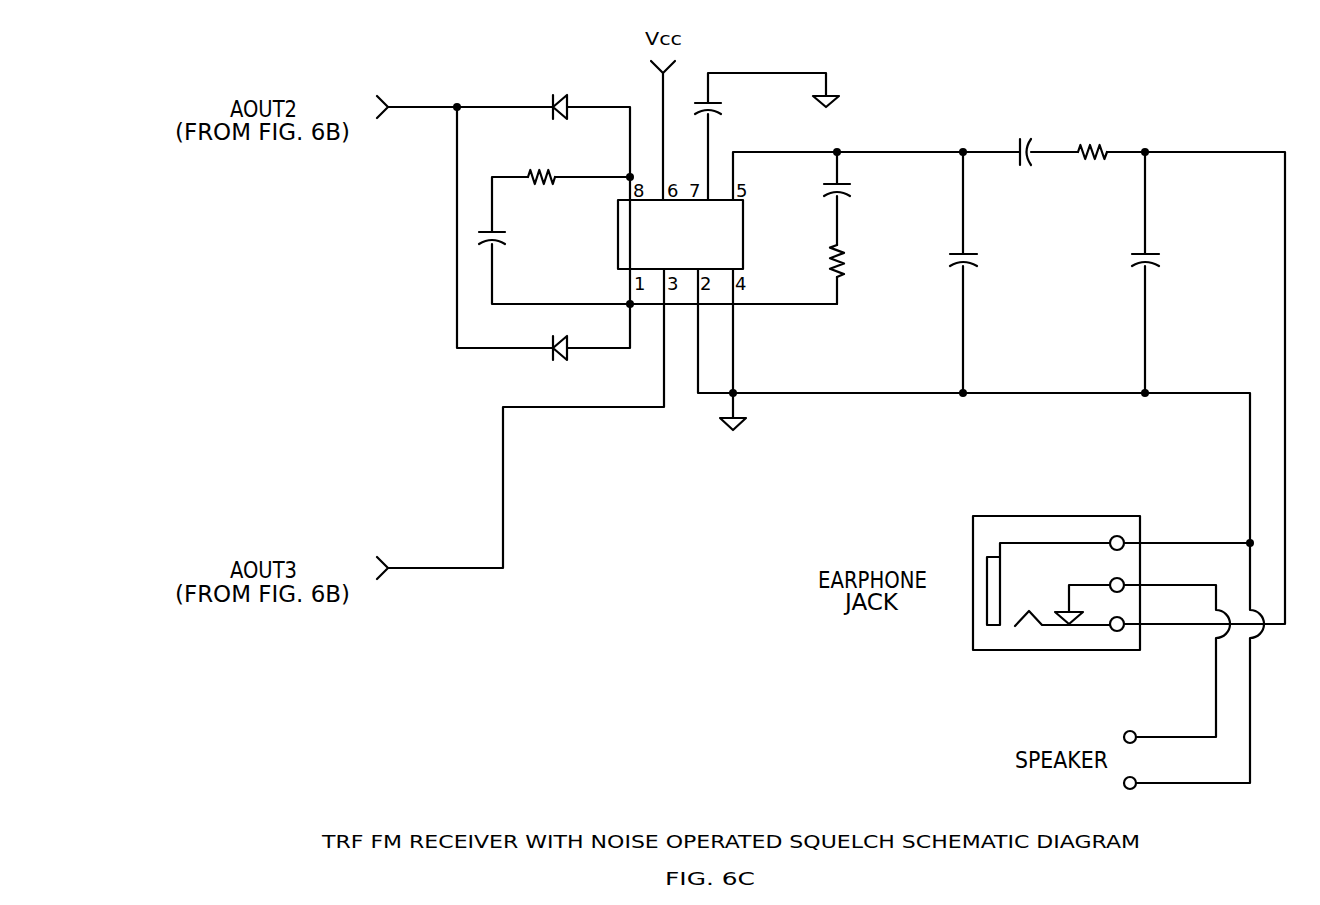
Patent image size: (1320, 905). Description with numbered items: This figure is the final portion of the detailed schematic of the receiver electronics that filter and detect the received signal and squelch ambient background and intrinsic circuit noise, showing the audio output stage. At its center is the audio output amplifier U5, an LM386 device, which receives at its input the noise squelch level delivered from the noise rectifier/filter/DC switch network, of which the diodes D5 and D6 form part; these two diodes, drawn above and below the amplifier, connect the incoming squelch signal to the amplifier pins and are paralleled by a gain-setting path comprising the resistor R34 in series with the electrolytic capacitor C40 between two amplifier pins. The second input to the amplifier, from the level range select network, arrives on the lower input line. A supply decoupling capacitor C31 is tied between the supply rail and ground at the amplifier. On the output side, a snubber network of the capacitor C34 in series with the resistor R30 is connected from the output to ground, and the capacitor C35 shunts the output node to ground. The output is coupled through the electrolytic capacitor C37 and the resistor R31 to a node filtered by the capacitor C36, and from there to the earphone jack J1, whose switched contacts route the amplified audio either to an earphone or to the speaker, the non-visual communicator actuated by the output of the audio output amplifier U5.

The diode D5 is at (566, 107).
The diode D6 is at (566, 349).
The resistor 1K R34 is at (548, 178).
The capacitor 10uF C40 is at (516, 241).
The audio output amplifier U5 is at (680, 234).
The capacitor 4.7uF 10V C31 is at (741, 121).
The capacitor 2200pF C34 is at (877, 190).
The resistor 15K R30 is at (862, 269).
The capacitor 100uF 10V C37 is at (1019, 165).
The resistor 3.3 R31 is at (1097, 153).
The capacitor 0.027 C35 is at (996, 259).
The capacitor 22uF 16V C36 is at (1169, 269).
The earphone jack J1 is at (1056, 562).